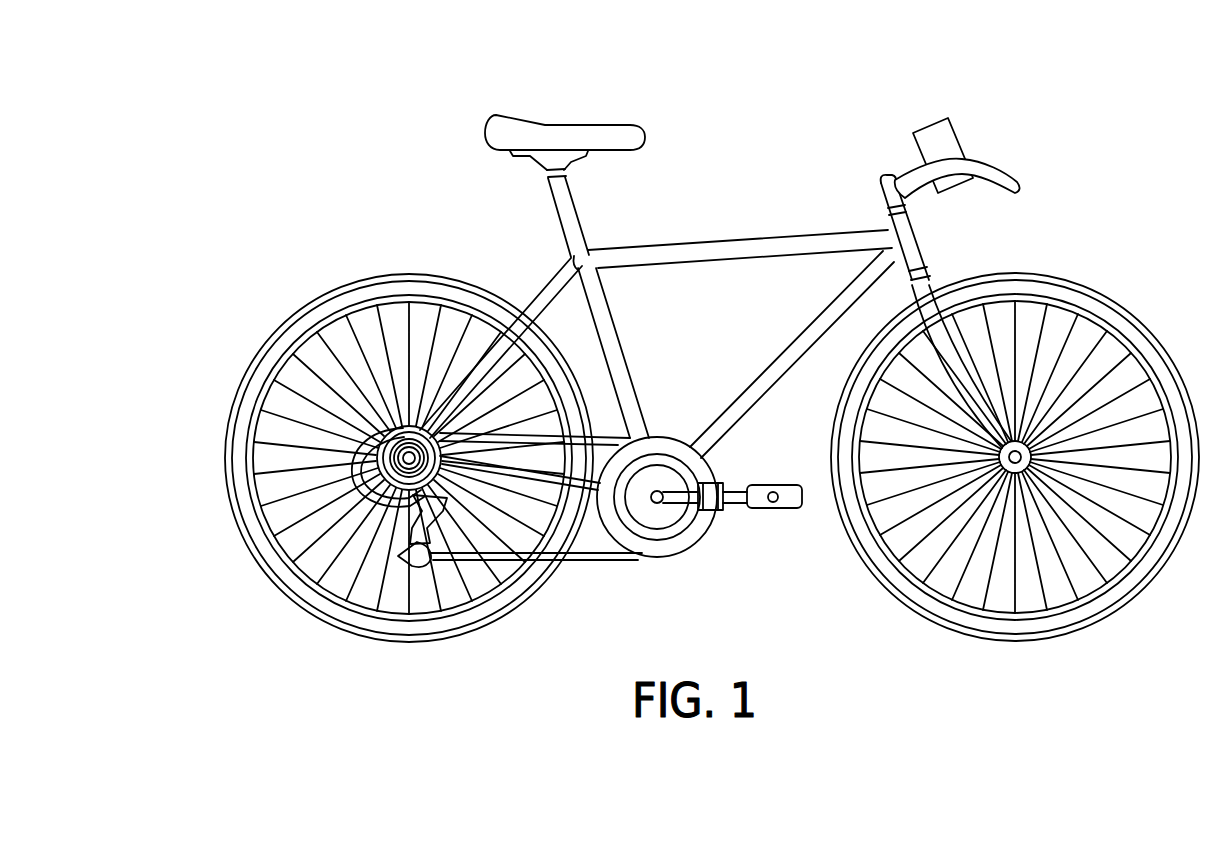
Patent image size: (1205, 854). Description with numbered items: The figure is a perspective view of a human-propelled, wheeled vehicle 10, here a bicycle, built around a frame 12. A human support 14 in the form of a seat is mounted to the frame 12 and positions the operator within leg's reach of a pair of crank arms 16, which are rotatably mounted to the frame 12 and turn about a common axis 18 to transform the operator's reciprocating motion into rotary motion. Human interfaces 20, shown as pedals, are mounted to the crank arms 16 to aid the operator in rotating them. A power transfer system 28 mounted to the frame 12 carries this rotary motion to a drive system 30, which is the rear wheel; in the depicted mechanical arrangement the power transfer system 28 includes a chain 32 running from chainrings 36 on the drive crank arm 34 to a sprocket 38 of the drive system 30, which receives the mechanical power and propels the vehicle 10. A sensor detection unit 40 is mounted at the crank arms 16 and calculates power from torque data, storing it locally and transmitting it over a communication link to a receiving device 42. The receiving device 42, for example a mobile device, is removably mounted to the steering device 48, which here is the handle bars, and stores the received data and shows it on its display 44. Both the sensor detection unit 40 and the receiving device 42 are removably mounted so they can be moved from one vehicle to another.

The human-propelled, wheeled vehicle 10 is at (1078, 208).
The frame 12 is at (749, 236).
The human support 14 is at (543, 122).
The crank arms 16 is at (731, 499).
The common axis 18 is at (659, 505).
The human interfaces 20 is at (786, 511).
The power transfer system 28 is at (582, 564).
The drive system 30 is at (331, 621).
The belt and/or chain 32 is at (600, 560).
The drive crank arm 34 is at (751, 530).
The chainrings 36 is at (656, 465).
The sprocket 38 is at (404, 434).
The sensor detection unit 40 is at (722, 483).
The receiving device 42 is at (959, 156).
The display 44 is at (920, 133).
The steering device 48 is at (1003, 183).